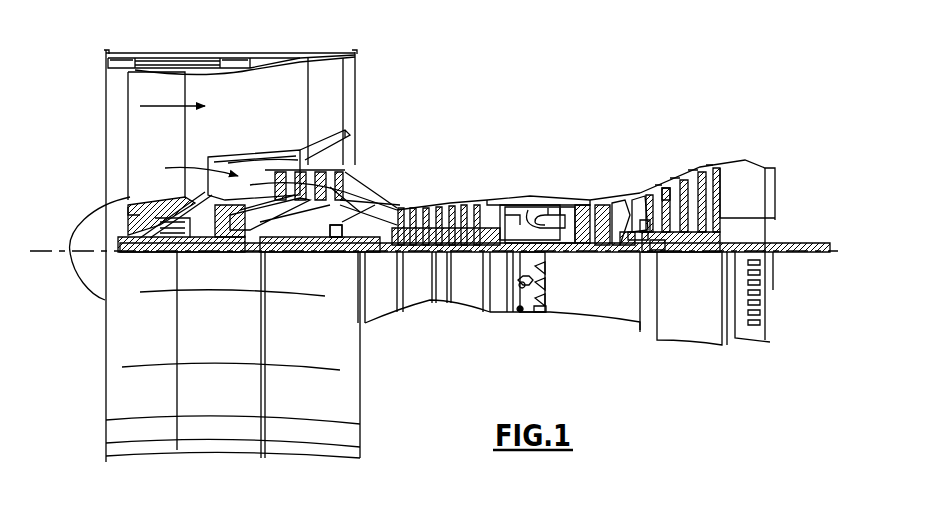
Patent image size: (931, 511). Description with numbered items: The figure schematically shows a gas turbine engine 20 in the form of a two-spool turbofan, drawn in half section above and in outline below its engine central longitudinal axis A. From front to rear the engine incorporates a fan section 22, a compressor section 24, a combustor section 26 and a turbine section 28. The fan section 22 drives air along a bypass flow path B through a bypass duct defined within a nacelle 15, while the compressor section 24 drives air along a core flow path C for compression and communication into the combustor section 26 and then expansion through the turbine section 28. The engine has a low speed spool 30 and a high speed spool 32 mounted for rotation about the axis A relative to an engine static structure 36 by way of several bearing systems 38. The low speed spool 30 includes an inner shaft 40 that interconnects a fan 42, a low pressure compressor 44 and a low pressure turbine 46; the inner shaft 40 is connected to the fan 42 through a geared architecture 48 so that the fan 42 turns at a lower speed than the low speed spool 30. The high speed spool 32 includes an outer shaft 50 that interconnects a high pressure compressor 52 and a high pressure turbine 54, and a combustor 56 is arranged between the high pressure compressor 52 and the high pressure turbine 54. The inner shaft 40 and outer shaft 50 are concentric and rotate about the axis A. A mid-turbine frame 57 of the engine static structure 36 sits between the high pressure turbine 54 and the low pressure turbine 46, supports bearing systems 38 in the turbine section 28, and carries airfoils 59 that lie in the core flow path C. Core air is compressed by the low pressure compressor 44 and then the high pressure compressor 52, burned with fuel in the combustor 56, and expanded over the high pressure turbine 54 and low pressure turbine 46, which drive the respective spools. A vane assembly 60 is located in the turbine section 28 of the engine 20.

The nacelle 15 is at (220, 52).
The gas turbine engine 20 is at (562, 82).
The fan section 22 is at (186, 44).
The compressor section 24 is at (392, 185).
The combustor section 26 is at (549, 176).
The turbine section 28 is at (652, 152).
The low speed spool 30 is at (470, 262).
The high speed spool 32 is at (500, 208).
The engine static structure 36 is at (497, 262).
The bearing systems 38 is at (331, 252).
The inner shaft 40 is at (378, 262).
The fan 42 is at (173, 137).
The low pressure compressor 44 is at (312, 170).
The low pressure turbine 46 is at (688, 172).
The geared architecture 48 is at (240, 252).
The outer shaft 50 is at (555, 252).
The high pressure compressor 52 is at (447, 185).
The high pressure turbine 54 is at (637, 168).
The combustor 56 is at (556, 215).
The mid-turbine frame 57 is at (636, 195).
The airfoils 59 is at (645, 232).
The vane assembly 60 is at (677, 160).
The engine central longitudinal axis A is at (830, 251).
The bypass flow path B is at (168, 104).
The core flow path C is at (192, 166).